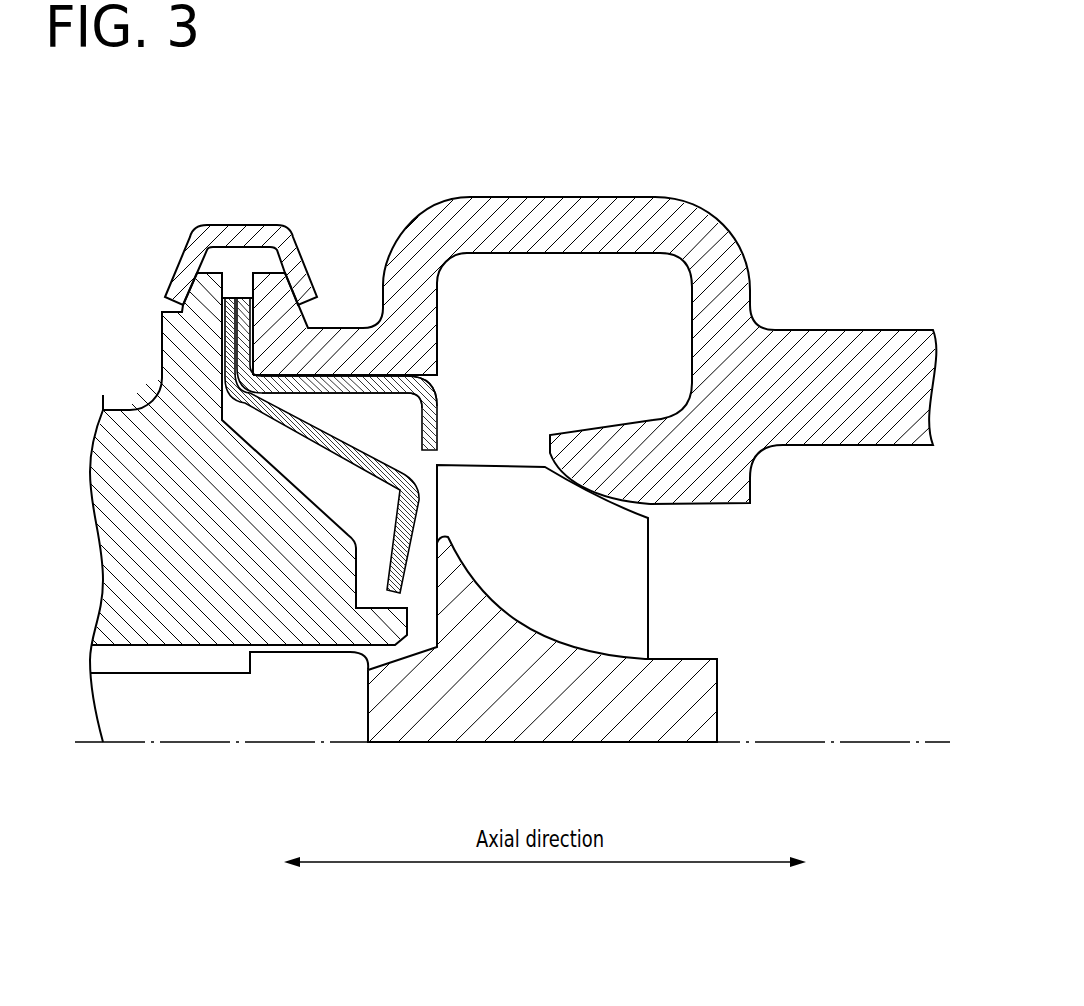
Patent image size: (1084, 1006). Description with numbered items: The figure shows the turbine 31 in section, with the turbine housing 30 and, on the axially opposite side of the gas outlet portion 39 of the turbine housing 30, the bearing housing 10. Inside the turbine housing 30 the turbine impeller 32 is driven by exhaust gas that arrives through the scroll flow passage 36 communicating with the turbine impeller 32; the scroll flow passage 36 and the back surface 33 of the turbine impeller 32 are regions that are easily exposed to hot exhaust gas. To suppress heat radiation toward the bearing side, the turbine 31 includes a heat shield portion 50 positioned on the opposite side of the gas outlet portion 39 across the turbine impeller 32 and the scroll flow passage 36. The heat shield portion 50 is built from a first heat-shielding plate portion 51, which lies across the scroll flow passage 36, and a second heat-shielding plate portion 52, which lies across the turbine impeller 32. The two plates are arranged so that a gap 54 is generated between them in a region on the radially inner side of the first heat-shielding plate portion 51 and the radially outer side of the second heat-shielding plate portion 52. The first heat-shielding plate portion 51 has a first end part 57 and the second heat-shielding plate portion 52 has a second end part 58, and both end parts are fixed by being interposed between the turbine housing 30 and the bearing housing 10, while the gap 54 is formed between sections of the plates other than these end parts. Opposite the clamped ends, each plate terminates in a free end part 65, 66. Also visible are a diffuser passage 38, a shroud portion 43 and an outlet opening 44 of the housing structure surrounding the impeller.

The bearing housing 10 is at (130, 408).
The turbine housing 30 is at (843, 330).
The turbine 31 is at (707, 100).
The turbine impeller 32 is at (650, 580).
The back surface 33 is at (448, 540).
The scroll flow passage 36 is at (627, 293).
The diffuser passage 38 is at (503, 400).
The gas outlet portion 39 is at (850, 567).
The shroud portion 43 is at (540, 433).
The outlet opening 44 is at (440, 413).
The heat shield portion 50 is at (358, 140).
The first heat-shielding plate portion 51 is at (350, 390).
The second heat-shielding plate portion 52 is at (375, 453).
The gap 54 is at (330, 405).
The first end part 57 is at (243, 298).
The second end part 58 is at (226, 298).
The end part 65 is at (438, 433).
The end part 66 is at (433, 512).